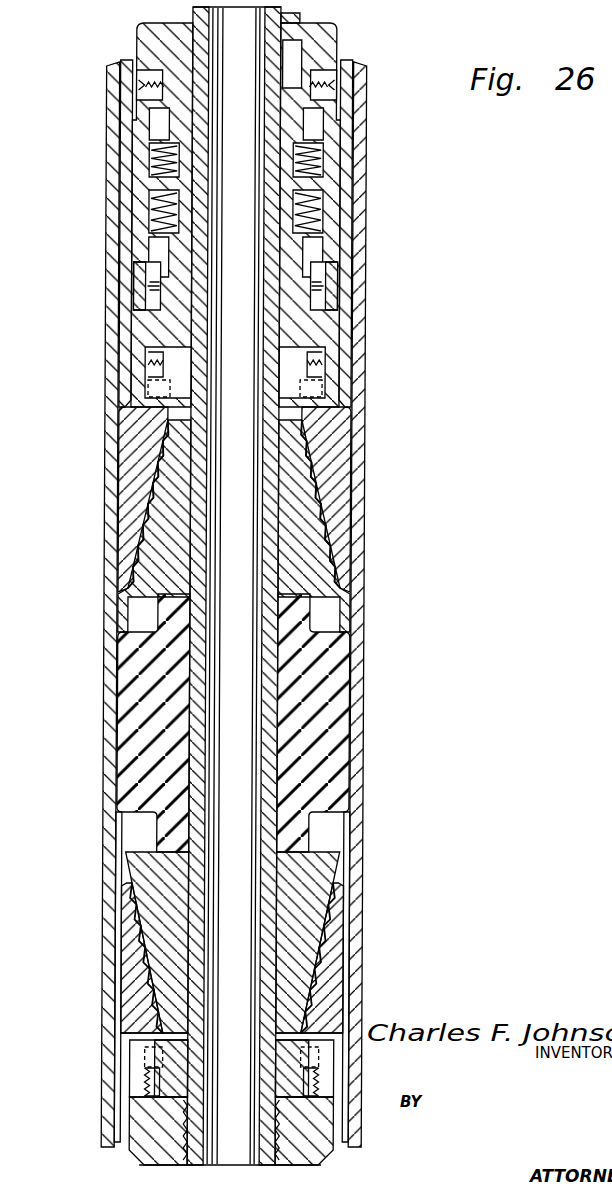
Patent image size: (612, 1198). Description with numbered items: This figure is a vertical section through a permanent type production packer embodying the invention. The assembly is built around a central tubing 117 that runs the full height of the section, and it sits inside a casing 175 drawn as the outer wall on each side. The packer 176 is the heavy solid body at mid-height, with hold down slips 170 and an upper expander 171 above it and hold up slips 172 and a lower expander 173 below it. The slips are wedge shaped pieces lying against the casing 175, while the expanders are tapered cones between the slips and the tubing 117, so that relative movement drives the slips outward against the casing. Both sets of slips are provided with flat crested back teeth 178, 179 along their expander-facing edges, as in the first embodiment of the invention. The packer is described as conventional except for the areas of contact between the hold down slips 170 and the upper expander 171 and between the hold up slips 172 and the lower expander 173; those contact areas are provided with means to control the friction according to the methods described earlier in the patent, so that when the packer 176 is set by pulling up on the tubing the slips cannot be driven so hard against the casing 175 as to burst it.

The tubing mandrel 117 is at (197, 15).
The hold down slips 170 is at (132, 459).
The flat crested back teeth 178 is at (127, 490).
The upper expander 171 is at (150, 578).
The packer 176 is at (135, 707).
The casing 175 is at (124, 826).
The lower expander 173 is at (320, 863).
The flat crested back teeth 179 is at (138, 934).
The hold up slips 172 is at (140, 1000).